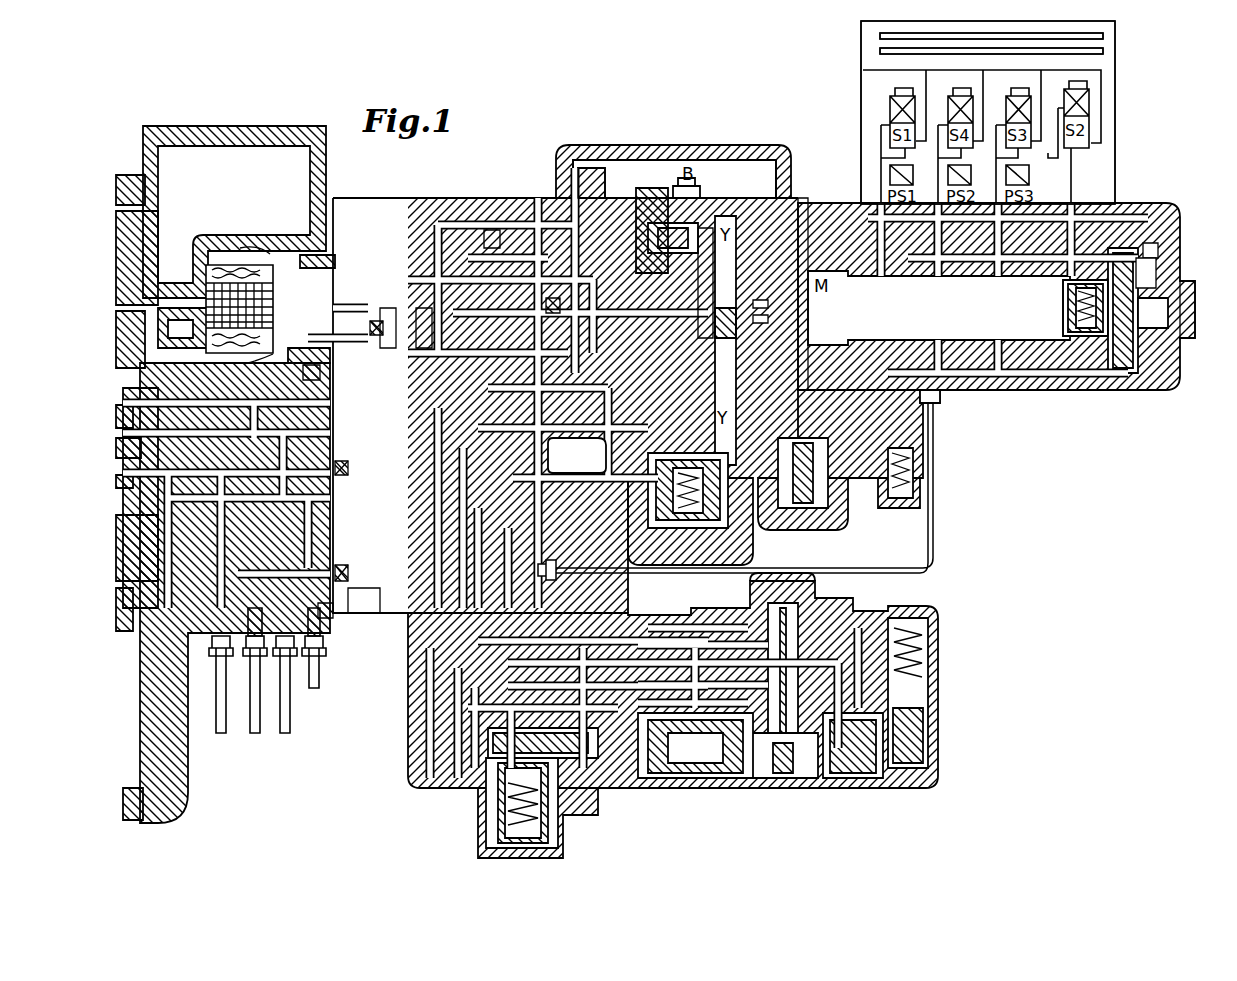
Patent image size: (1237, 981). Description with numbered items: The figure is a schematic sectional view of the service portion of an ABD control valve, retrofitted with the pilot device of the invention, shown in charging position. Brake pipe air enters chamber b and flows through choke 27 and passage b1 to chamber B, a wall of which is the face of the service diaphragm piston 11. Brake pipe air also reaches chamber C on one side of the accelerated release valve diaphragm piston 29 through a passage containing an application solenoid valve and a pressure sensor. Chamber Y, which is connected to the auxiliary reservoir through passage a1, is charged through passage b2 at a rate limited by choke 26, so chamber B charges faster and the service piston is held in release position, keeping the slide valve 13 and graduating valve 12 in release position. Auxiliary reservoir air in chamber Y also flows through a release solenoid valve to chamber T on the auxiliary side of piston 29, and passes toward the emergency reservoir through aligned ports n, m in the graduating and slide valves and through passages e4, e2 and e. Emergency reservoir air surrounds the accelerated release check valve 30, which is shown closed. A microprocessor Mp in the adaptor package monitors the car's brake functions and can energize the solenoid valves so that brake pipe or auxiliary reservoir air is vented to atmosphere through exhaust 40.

The service diaphragm piston 11 is at (617, 240).
The graduating valve 12 is at (800, 192).
The slide valve 13 is at (698, 330).
The choke 26 is at (352, 595).
The choke 27 is at (362, 318).
The accelerated release valve diaphragm piston 29 is at (1165, 280).
The accelerated release check valve 30 is at (1060, 305).
The exhaust 40 is at (855, 62).
The microprocessor Mp is at (1103, 35).
The port n is at (758, 296).
The port m is at (758, 311).
The chamber b is at (262, 246).
The passage b1 is at (380, 320).
The passage b2 is at (416, 330).
The passage a1 is at (483, 228).
The passage e is at (316, 608).
The passage e2 is at (300, 358).
The passage e4 is at (545, 298).
The chamber C is at (1150, 242).
The chamber T is at (1148, 260).